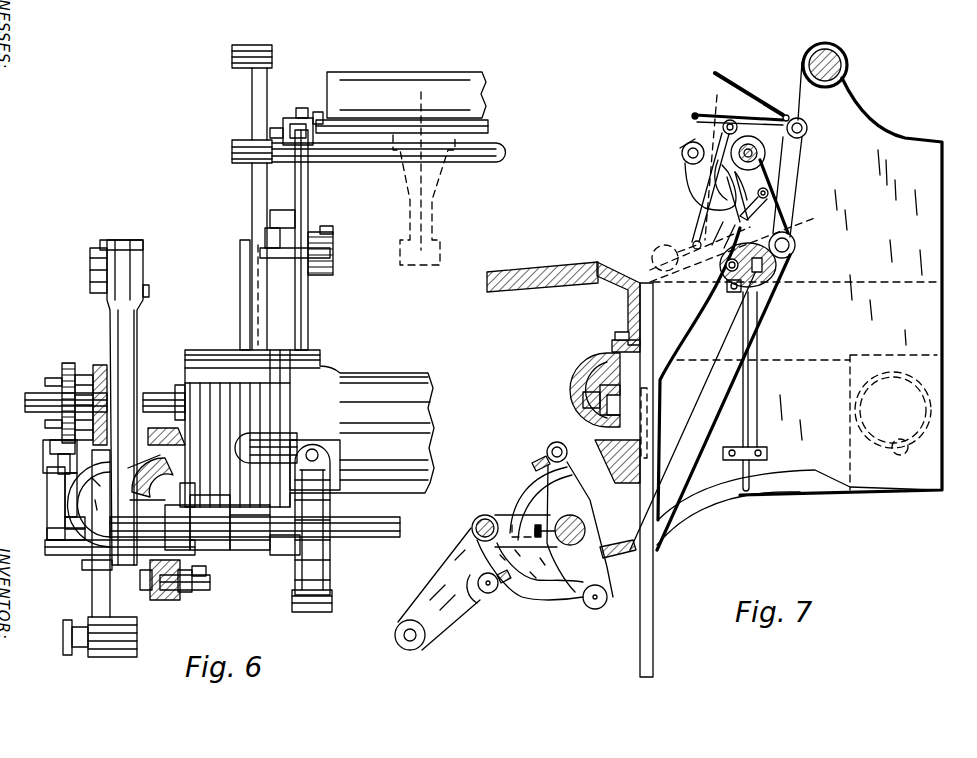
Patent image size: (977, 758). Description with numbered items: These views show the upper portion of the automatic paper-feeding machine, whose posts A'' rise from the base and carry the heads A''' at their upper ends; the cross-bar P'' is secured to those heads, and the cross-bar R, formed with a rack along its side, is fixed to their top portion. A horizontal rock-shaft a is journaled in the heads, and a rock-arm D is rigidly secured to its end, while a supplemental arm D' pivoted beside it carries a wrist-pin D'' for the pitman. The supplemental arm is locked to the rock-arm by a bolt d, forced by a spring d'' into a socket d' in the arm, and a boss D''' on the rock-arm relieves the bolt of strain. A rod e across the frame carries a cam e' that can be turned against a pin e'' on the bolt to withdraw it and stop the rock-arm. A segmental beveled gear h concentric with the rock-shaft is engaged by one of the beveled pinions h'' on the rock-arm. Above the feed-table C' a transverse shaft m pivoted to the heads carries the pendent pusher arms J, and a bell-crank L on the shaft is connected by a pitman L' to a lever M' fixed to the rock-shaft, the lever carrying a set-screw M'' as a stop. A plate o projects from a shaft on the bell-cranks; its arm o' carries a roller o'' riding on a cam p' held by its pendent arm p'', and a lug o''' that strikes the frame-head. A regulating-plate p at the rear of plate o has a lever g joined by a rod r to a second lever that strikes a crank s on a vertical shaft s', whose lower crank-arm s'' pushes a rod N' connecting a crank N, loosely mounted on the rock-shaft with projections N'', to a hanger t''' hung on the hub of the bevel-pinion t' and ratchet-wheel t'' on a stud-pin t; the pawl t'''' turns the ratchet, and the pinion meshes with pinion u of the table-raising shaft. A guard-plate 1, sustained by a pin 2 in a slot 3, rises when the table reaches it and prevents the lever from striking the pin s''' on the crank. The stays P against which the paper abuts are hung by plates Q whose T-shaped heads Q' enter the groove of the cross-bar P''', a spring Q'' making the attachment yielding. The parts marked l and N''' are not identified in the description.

In FIG. 6, the pendent arm p'' is at (241, 197).
In FIG. 7, the pendent arm p'' is at (706, 191).
In FIG. 6, the heads A''' is at (230, 276).
In FIG. 6, the transverse shaft m is at (500, 163).
In FIG. 7, the transverse shaft m is at (777, 160).
In FIG. 6, the stays P is at (402, 102).
In FIG. 7, the stays P is at (659, 480).
In FIG. 6, the arms J is at (424, 178).
In FIG. 7, the arms J is at (733, 188).
In FIG. 6, the roller o'' is at (298, 117).
In FIG. 7, the roller o'' is at (788, 107).
In FIG. 6, the forwardly-extending arm o' is at (314, 110).
In FIG. 7, the forwardly-extending arm o' is at (733, 113).
In FIG. 6, the cam p' is at (289, 103).
In FIG. 7, the cam p' is at (690, 171).
In FIG. 6, the pitman L' is at (297, 240).
In FIG. 7, the pitman L' is at (695, 406).
In FIG. 6, the crank s is at (312, 261).
In FIG. 7, the crank s is at (717, 248).
In FIG. 6, the link l is at (280, 229).
In FIG. 6, the cross-bar P'' is at (307, 428).
In FIG. 7, the cross-bar P'' is at (586, 418).
In FIG. 6, the rock-arm D is at (110, 402).
In FIG. 7, the rock-arm D is at (532, 500).
In FIG. 6, the beveled pinions h'' is at (134, 249).
In FIG. 6, the stud-pin t is at (96, 395).
In FIG. 6, the ratchet-wheel t'' is at (61, 392).
In FIG. 6, the hanger t''' is at (69, 394).
In FIG. 6, the bevel-pinion t' is at (96, 393).
In FIG. 6, the pawl t'''' is at (49, 455).
In FIG. 6, the pinion u is at (166, 428).
In FIG. 6, the segmental beveled gear h is at (150, 469).
In FIG. 6, the crank N is at (73, 504).
In FIG. 6, the rod N' is at (49, 503).
In FIG. 7, the rod N' is at (864, 431).
In FIG. 6, the lower crank-arm s'' is at (46, 512).
In FIG. 6, the projections N'' is at (51, 526).
In FIG. 6, the lower shaft N''' is at (104, 558).
In FIG. 6, the rod e is at (263, 527).
In FIG. 7, the rod e is at (476, 522).
In FIG. 6, the horizontal shaft a is at (352, 540).
In FIG. 7, the horizontal shaft a is at (560, 512).
In FIG. 6, the lever M' is at (323, 529).
In FIG. 7, the lever M' is at (593, 589).
In FIG. 6, the set-screw M'' is at (333, 460).
In FIG. 7, the set-screw M'' is at (528, 456).
In FIG. 6, the spring d'' is at (171, 597).
In FIG. 6, the bolt d is at (188, 585).
In FIG. 7, the bolt d is at (486, 605).
In FIG. 6, the cam e' is at (209, 566).
In FIG. 7, the cam e' is at (530, 586).
In FIG. 6, the lug or pin e'' is at (176, 580).
In FIG. 7, the lug or pin e'' is at (516, 577).
In FIG. 6, the supplemental arm D' is at (88, 533).
In FIG. 7, the supplemental arm D' is at (439, 589).
In FIG. 6, the wrist-pin D'' is at (100, 648).
In FIG. 7, the wrist-pin D'' is at (397, 635).
In FIG. 6, the boss D''' is at (85, 569).
In FIG. 7, the posts A'' is at (797, 303).
In FIG. 7, the cross-bar R is at (816, 58).
In FIG. 7, the feed-table C' is at (542, 273).
In FIG. 7, the cross-bar P''' is at (604, 315).
In FIG. 7, the T-shaped head Q' is at (607, 401).
In FIG. 7, the spring Q'' is at (552, 409).
In FIG. 7, the plate Q is at (657, 423).
In FIG. 7, the vertical shaft s' is at (752, 391).
In FIG. 7, the slot 3 is at (742, 292).
In FIG. 7, the guard-plate 1 is at (748, 265).
In FIG. 7, the pin 2 is at (780, 245).
In FIG. 7, the bell-crank L is at (789, 187).
In FIG. 7, the pin s''' is at (789, 196).
In FIG. 7, the regulating-plate p is at (749, 88).
In FIG. 7, the lever g is at (703, 115).
In FIG. 7, the lug o''' is at (786, 110).
In FIG. 7, the metallic plate o is at (754, 151).
In FIG. 7, the rod r is at (695, 115).
In FIG. 7, the socket d' is at (678, 133).